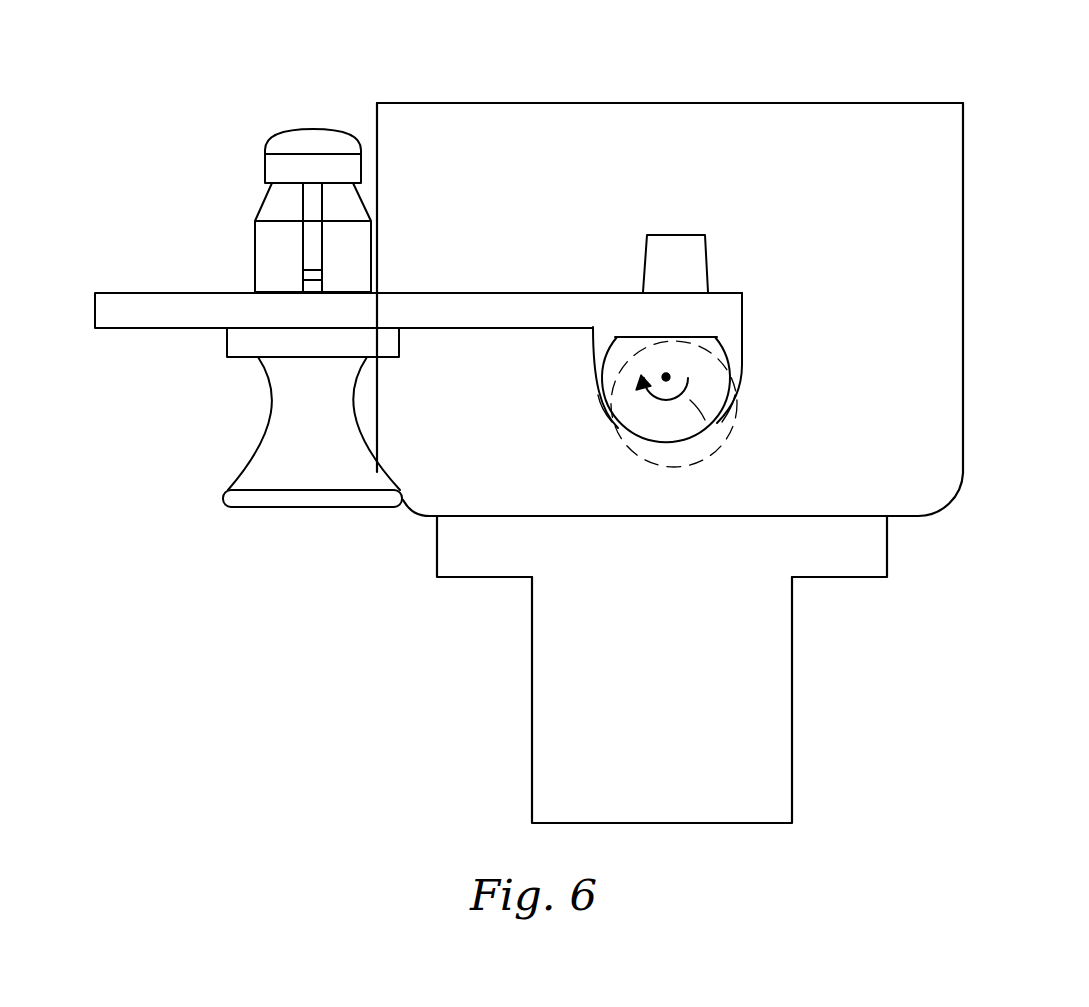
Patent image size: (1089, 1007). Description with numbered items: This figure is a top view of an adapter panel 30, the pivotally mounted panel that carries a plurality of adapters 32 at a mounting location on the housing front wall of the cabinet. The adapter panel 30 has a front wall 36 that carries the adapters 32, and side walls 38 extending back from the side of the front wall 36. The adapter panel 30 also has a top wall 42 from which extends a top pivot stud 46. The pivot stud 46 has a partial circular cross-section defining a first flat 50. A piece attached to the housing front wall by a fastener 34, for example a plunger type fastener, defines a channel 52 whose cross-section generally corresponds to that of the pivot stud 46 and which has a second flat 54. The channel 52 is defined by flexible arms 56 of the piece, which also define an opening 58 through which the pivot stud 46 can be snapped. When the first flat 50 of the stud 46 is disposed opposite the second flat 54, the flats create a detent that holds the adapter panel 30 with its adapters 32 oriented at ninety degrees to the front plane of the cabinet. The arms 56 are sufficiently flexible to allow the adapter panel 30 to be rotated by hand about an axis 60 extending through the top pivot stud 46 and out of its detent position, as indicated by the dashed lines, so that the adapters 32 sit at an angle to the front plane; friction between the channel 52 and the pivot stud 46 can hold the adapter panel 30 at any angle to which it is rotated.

The adapter panel 30 is at (910, 492).
The adapter 32 is at (768, 710).
The fastener 34 is at (285, 497).
The front wall 36 is at (890, 518).
The side wall 38 is at (963, 303).
The top wall 42 is at (828, 117).
The top pivot stud 46 is at (683, 422).
The first flat 50 is at (703, 335).
The channel 52 is at (697, 397).
The second flat 54 is at (615, 342).
The flexible arm 56 is at (603, 403).
The opening 58 is at (647, 442).
The axis 60 is at (668, 375).